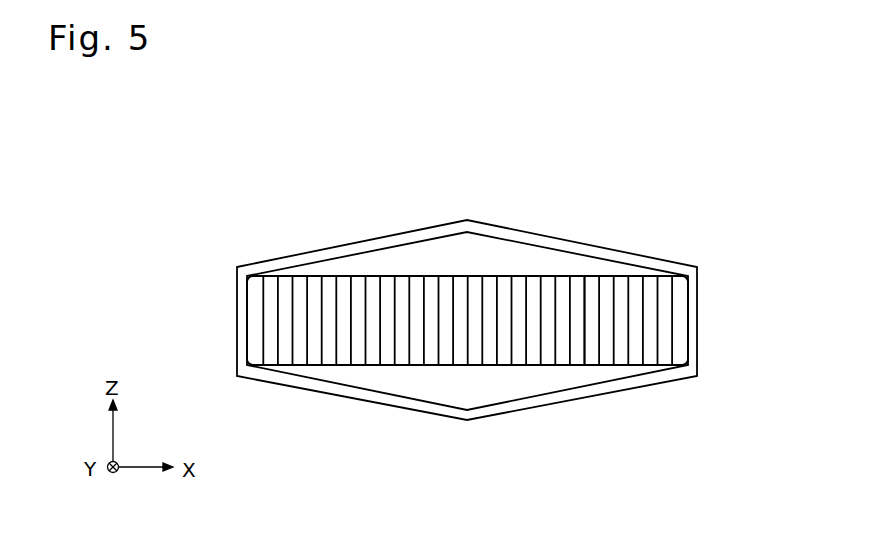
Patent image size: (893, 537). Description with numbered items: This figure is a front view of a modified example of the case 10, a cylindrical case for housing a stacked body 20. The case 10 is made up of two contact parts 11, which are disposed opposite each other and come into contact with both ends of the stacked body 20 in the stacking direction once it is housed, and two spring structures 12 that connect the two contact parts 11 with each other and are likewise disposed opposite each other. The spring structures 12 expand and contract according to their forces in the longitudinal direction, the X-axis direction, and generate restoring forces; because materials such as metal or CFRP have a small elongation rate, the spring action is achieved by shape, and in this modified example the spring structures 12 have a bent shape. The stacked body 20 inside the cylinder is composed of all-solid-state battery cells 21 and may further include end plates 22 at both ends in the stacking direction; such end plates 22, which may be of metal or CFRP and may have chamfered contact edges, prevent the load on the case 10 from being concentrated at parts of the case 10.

The case 10 is at (232, 298).
The contact part 11 is at (705, 272).
The spring structure 12 is at (687, 214).
The stacked body 20 is at (372, 367).
The all-solid-state battery cell 21 is at (577, 347).
The end plate 22 is at (684, 356).